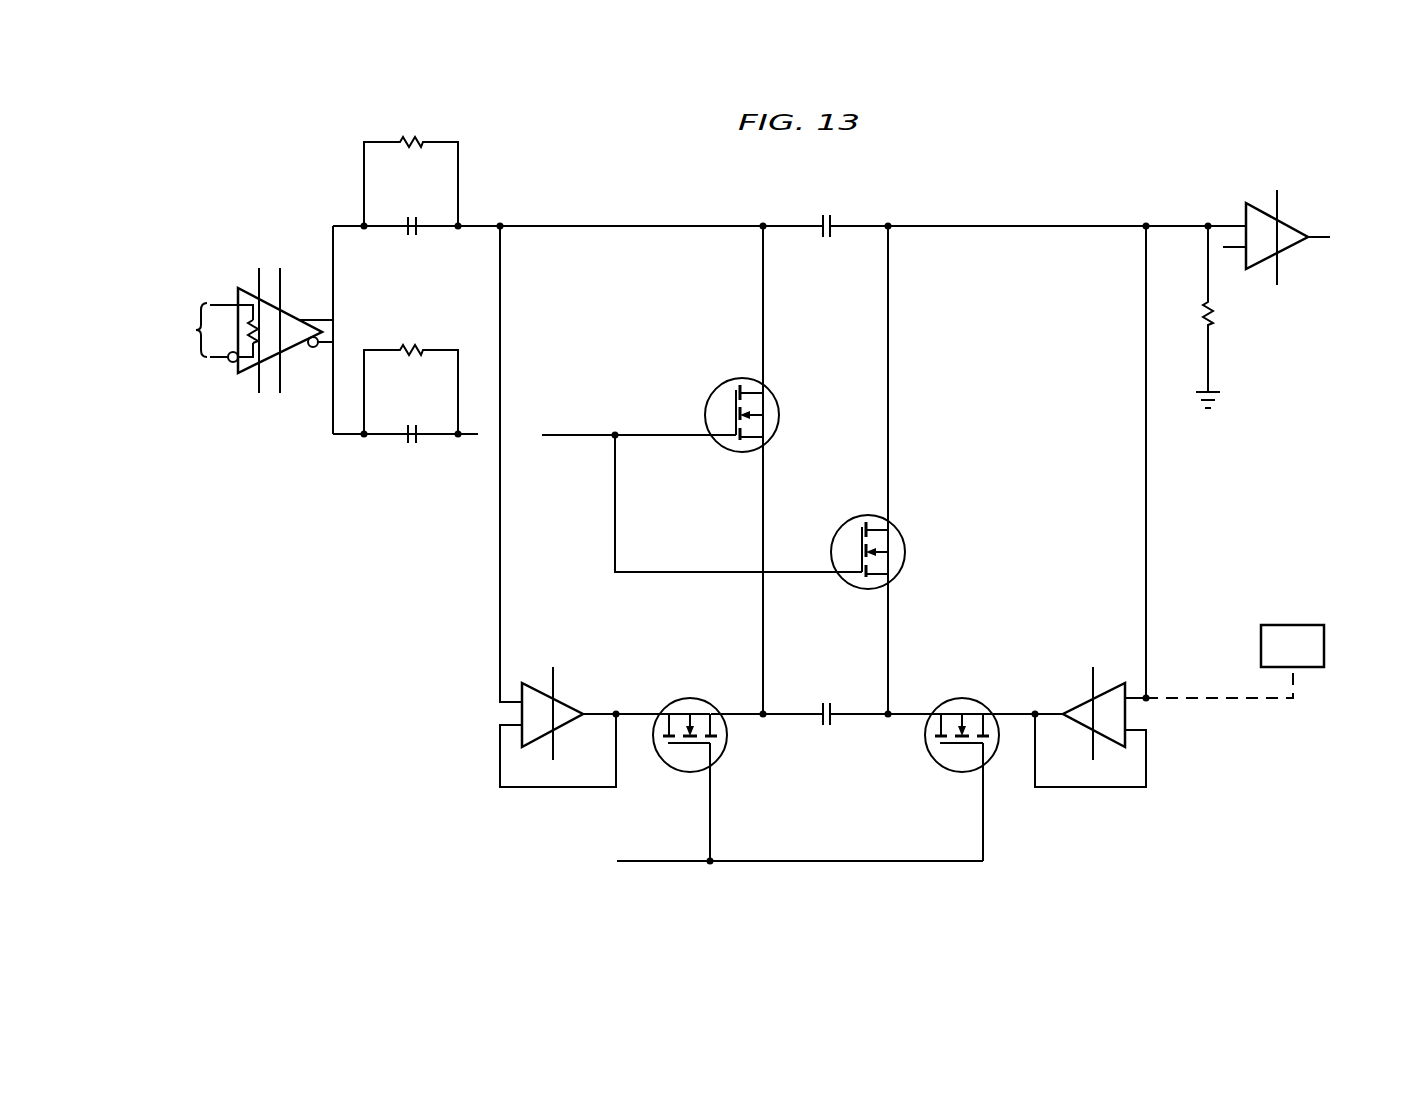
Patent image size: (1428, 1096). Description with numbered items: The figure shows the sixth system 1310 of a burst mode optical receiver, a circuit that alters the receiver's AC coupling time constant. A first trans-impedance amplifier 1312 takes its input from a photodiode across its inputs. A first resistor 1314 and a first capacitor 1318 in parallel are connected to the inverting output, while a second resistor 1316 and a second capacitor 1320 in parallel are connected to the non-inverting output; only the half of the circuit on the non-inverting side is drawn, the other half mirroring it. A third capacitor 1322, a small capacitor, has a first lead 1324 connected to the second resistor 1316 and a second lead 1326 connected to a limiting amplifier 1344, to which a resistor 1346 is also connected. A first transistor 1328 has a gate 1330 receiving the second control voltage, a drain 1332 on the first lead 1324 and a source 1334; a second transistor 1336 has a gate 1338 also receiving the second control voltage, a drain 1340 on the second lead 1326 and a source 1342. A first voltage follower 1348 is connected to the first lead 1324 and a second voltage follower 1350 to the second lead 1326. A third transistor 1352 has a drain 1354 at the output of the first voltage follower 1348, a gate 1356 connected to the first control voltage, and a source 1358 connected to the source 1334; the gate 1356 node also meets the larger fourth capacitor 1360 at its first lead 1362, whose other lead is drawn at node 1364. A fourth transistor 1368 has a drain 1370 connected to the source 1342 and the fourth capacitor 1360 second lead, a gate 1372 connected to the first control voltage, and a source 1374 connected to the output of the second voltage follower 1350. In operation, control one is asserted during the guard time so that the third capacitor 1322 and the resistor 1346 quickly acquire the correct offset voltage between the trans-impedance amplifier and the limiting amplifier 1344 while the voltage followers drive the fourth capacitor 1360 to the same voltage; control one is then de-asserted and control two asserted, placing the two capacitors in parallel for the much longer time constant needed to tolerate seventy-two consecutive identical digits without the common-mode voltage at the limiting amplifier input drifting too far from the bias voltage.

The sixth system 1310 is at (554, 114).
The first trans-impedance amplifier 1312 is at (249, 287).
The first resistor 1314 is at (404, 348).
The second resistor 1316 is at (404, 138).
The first capacitor 1318 is at (412, 446).
The second capacitor 1320 is at (412, 238).
The third capacitor 1322 is at (827, 240).
The first lead 1324 is at (792, 224).
The second lead 1326 is at (863, 224).
The first transistor 1328 is at (722, 383).
The gate 1330 is at (585, 440).
The drain 1332 is at (762, 295).
The source 1334 is at (760, 508).
The second transistor 1336 is at (852, 518).
The gate 1338 is at (823, 577).
The drain 1340 is at (889, 357).
The source 1342 is at (889, 621).
The limiting amplifier 1344 is at (1284, 220).
The resistor 1346 is at (1213, 318).
The first voltage follower 1348 is at (566, 704).
The second voltage follower 1350 is at (1083, 704).
The third transistor 1352 is at (670, 772).
The drain 1354 is at (640, 712).
The gate 1356 is at (712, 803).
The source 1358 is at (740, 712).
The fourth capacitor 1360 is at (828, 728).
The first lead 1362 is at (792, 718).
The node connection 1364 is at (870, 712).
The fourth transistor 1368 is at (940, 772).
The drain 1370 is at (912, 712).
The gate 1372 is at (984, 820).
The source 1374 is at (1012, 712).